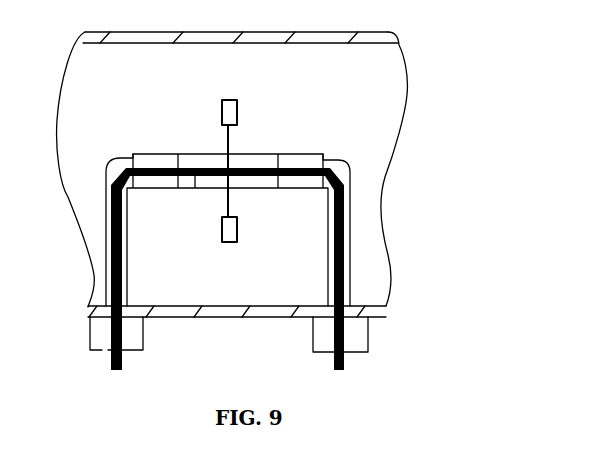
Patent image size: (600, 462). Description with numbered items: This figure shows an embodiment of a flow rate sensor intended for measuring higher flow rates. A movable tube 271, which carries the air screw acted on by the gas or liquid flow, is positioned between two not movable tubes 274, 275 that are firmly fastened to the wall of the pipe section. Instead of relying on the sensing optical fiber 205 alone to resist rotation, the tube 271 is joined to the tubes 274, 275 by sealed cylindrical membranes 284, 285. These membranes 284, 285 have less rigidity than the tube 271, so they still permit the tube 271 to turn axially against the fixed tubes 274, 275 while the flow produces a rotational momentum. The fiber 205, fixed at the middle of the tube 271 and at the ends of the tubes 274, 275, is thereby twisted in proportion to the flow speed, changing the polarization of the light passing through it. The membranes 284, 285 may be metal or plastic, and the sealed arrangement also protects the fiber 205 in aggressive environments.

The sensing optical fiber 205 is at (193, 190).
The tube 271 is at (260, 190).
The not movable tube 274 is at (107, 233).
The not movable tube 275 is at (350, 227).
The sealed cylindrical membrane 284 is at (167, 153).
The sealed cylindrical membrane 285 is at (303, 153).